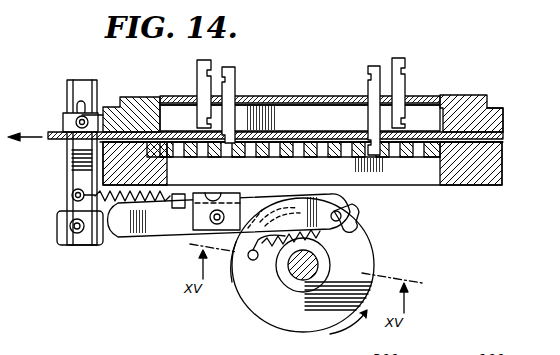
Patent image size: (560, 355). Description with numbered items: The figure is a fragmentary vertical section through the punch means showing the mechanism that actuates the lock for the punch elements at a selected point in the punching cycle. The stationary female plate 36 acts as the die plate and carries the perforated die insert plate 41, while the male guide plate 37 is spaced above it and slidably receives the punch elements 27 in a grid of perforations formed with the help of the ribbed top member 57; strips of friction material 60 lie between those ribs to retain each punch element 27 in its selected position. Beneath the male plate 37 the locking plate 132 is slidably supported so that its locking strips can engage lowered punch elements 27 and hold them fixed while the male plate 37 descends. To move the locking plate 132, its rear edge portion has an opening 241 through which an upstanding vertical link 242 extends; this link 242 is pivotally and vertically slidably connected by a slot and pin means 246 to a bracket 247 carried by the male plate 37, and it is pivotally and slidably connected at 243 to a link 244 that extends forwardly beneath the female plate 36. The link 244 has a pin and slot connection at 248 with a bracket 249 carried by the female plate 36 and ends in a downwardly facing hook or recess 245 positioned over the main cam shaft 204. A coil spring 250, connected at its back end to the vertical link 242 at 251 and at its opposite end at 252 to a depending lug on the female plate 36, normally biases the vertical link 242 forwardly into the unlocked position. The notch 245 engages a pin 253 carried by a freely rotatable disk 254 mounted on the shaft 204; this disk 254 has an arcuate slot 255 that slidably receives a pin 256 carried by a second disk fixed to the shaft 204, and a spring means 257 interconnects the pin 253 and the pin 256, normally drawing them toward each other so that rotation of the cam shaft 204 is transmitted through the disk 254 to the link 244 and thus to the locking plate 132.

The punch element 27 is at (404, 89).
The female plate 36 is at (490, 181).
The male guide plate 37 is at (503, 110).
The die insert plate 41 is at (436, 150).
The top member 57 is at (447, 96).
The strips of friction material 60 is at (407, 106).
The locking plate 132 is at (458, 137).
The cam shaft 204 is at (313, 268).
The opening 241 is at (72, 140).
The vertical link 242 is at (97, 88).
The pivotal and slidable connection 243 is at (70, 228).
The link 244 is at (147, 234).
The hook or recess 245 is at (358, 228).
The slot and pin means 246 is at (78, 118).
The bracket 247 is at (63, 120).
The pin and slot connection 248 is at (210, 217).
The bracket 249 is at (246, 194).
The coil spring 250 is at (105, 245).
The spring connection 251 is at (72, 195).
The spring connection 252 is at (182, 194).
The pin 253 is at (341, 207).
The freely rotatable disk 254 is at (275, 322).
The arcuate slot 255 is at (233, 288).
The pin 256 is at (251, 261).
The spring means 257 is at (323, 241).